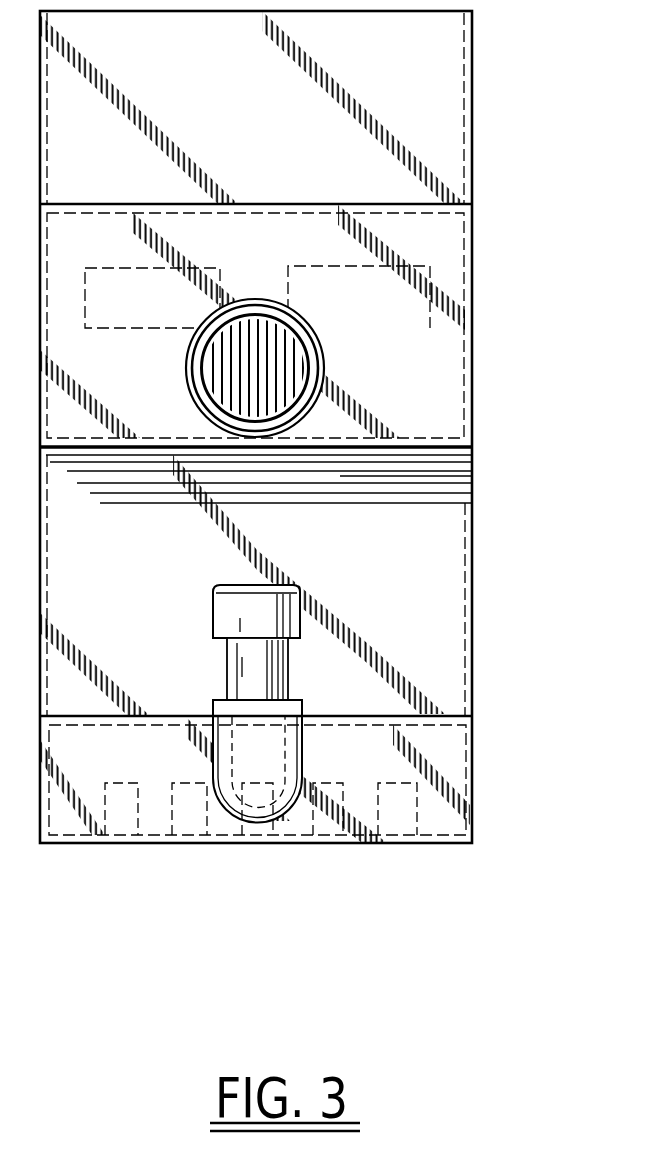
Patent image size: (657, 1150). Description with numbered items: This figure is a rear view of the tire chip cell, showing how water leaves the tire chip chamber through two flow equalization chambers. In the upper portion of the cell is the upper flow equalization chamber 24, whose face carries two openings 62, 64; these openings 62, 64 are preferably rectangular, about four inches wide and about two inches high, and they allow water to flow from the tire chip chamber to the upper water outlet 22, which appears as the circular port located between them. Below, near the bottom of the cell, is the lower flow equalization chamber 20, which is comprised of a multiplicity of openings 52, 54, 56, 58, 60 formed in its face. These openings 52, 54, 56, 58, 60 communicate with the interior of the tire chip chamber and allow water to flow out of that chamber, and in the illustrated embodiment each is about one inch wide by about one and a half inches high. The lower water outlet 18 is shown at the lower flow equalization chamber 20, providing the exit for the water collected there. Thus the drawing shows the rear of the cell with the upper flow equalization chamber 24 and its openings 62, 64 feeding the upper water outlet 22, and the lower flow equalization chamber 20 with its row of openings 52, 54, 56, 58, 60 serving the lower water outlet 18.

The lower water outlet 18 is at (300, 708).
The lower flow equalization chamber 20 is at (300, 714).
The upper water outlet 22 is at (295, 373).
The upper flow equalization chamber 24 is at (443, 250).
The opening 52 is at (124, 822).
The opening 54 is at (187, 823).
The opening 56 is at (272, 833).
The opening 58 is at (328, 848).
The opening 60 is at (407, 845).
The opening 62 is at (153, 302).
The opening 64 is at (415, 315).